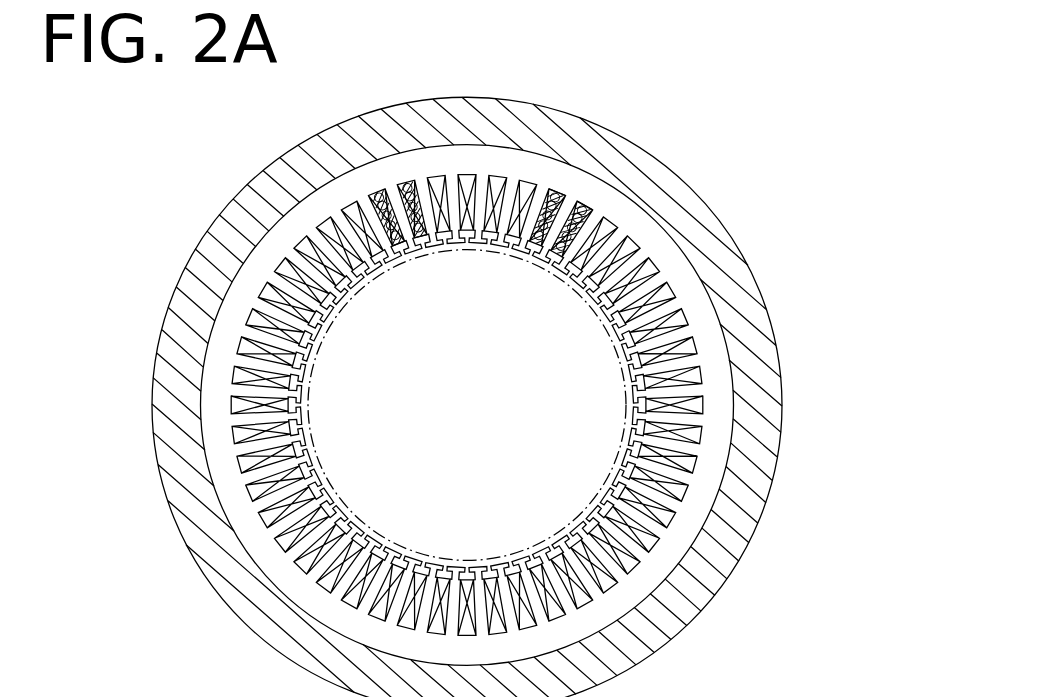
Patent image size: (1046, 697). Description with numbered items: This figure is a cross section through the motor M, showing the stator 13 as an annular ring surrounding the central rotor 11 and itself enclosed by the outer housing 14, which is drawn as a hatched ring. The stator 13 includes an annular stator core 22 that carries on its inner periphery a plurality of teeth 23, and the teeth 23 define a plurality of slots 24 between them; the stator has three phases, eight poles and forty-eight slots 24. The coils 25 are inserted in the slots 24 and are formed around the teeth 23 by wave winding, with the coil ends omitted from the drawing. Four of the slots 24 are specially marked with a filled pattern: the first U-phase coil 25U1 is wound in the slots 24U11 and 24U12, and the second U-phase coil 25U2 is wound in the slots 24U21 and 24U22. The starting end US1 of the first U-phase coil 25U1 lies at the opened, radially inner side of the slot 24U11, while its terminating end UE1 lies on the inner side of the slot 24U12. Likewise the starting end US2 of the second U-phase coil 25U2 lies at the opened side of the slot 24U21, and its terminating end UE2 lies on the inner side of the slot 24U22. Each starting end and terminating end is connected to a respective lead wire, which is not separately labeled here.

The motor M is at (270, 128).
The rotor 11 is at (489, 562).
The stator 13 is at (784, 228).
The housing 14 is at (729, 573).
The stator core 22 is at (733, 236).
The teeth 23 is at (310, 460).
The slots 24 is at (272, 482).
The coils 25 is at (673, 257).
The slot 24U11 is at (374, 193).
The slot 24U21 is at (405, 182).
The slot 24U22 is at (546, 250).
The slot 24U12 is at (562, 262).
The first U-phase coil 25U1 is at (398, 247).
The second U-phase coil 25U2 is at (408, 186).
The starting end US1 is at (399, 250).
The starting end US2 is at (416, 242).
The terminating end UE1 is at (590, 205).
The terminating end UE2 is at (560, 189).